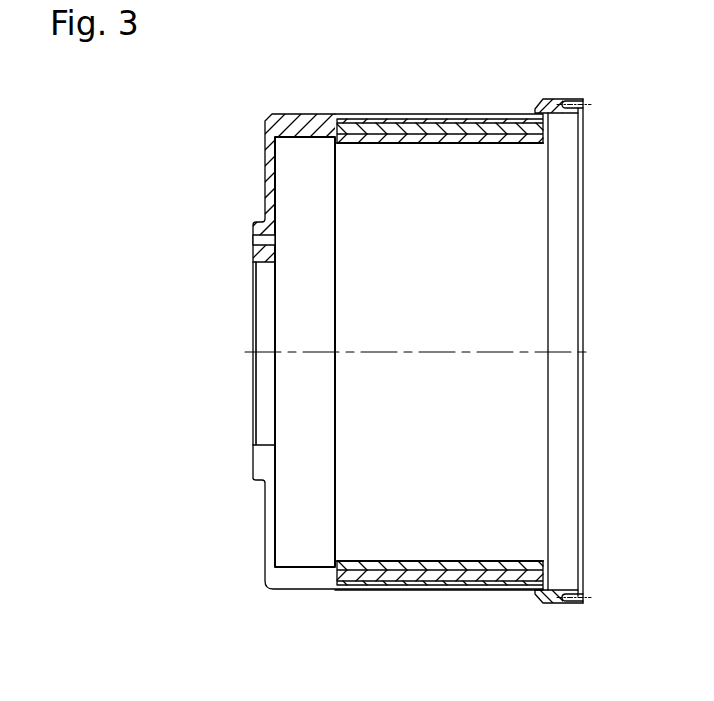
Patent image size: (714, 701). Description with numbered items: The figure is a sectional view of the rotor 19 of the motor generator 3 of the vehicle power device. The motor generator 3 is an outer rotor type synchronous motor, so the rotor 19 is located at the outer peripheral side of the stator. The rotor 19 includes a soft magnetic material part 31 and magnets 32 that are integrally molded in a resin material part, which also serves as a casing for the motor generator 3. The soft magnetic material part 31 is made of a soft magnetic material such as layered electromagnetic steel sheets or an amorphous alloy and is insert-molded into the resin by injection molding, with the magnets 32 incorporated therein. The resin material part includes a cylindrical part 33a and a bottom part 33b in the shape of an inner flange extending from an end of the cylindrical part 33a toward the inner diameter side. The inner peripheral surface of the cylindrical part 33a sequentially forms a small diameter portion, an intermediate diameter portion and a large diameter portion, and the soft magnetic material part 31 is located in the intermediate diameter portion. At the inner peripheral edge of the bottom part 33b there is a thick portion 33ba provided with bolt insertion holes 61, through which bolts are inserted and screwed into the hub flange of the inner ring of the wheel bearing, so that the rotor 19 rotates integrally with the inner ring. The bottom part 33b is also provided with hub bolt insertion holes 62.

The motor generator 3 is at (298, 122).
The rotor 19 is at (248, 140).
The soft magnetic material part 31 is at (455, 127).
The magnets 32 is at (387, 137).
The cylindrical part 33a is at (297, 582).
The bottom part 33b is at (265, 535).
The thick portion 33ba is at (258, 462).
The bolt insertion holes 61 is at (283, 240).
The hub bolt insertion holes 62 is at (283, 182).